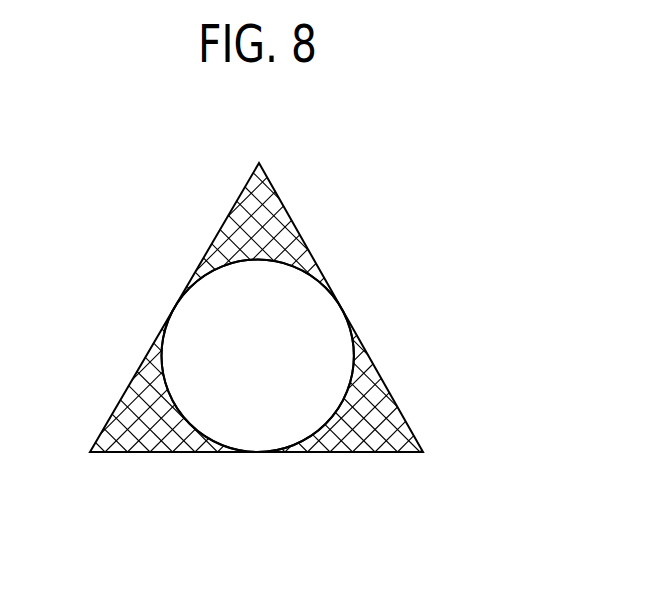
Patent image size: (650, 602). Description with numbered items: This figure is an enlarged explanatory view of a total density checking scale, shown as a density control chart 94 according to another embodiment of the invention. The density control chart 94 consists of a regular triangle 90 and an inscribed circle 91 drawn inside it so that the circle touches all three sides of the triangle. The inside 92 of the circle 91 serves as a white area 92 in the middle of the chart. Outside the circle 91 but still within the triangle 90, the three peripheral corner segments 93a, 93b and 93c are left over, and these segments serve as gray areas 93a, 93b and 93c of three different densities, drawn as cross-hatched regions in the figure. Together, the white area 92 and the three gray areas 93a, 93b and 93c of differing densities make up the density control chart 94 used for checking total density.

The regular triangle 90 is at (294, 224).
The inscribed circle 91 is at (344, 311).
The white area 92 is at (267, 357).
The gray area 93a is at (233, 233).
The gray area 93b is at (133, 392).
The gray area 93c is at (385, 418).
The density control chart 94 is at (411, 253).